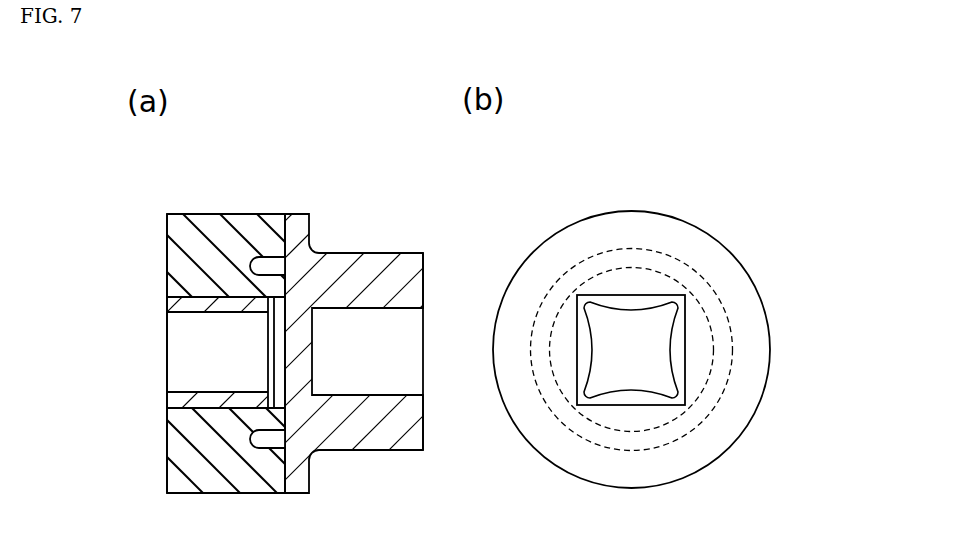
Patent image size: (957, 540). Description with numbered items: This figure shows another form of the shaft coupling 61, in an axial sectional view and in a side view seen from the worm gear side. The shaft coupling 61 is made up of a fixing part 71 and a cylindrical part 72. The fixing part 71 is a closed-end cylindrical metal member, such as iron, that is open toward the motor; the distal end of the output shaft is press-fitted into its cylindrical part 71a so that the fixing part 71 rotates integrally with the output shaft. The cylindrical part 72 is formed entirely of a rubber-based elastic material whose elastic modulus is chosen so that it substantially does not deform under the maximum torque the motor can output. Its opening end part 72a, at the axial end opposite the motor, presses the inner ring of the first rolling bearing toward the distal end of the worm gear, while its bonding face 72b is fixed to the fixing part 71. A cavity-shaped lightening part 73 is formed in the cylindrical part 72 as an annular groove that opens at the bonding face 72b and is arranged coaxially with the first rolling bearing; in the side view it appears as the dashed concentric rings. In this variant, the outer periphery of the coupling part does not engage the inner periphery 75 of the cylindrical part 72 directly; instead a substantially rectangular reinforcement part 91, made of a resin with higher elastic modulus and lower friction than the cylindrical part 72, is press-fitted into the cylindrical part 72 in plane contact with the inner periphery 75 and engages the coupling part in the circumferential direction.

The shaft coupling 61 is at (368, 174).
The fixing part 71 is at (300, 214).
The cylindrical part of the fixing part 71a is at (380, 253).
The cylindrical part 72 is at (198, 214).
The opening end part 72a is at (167, 257).
The bonding face 72b is at (289, 470).
The lightening part 73 is at (272, 258).
The inner periphery 75 is at (626, 297).
The reinforcement part 91 is at (167, 300).